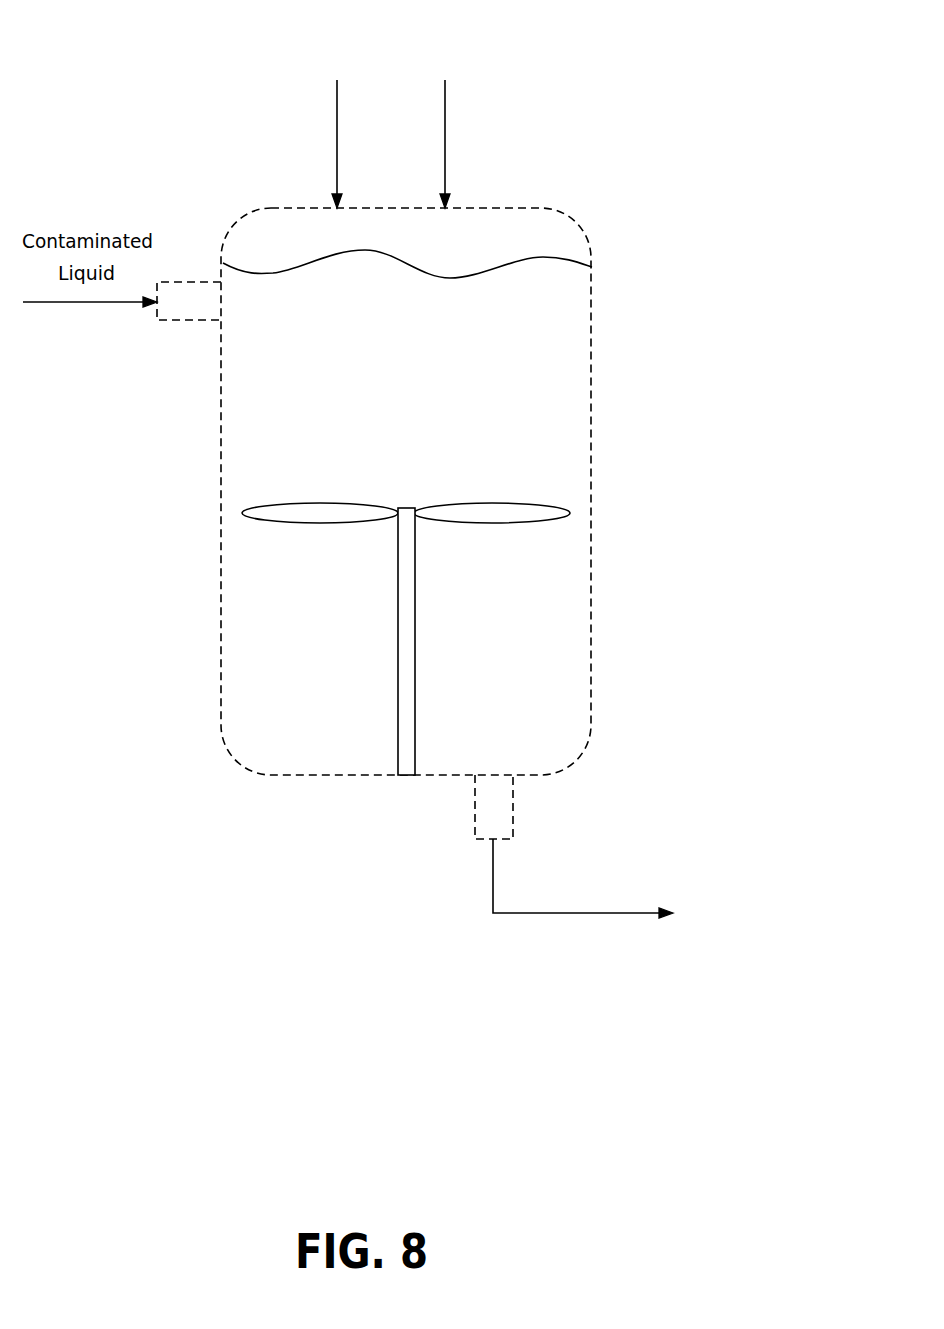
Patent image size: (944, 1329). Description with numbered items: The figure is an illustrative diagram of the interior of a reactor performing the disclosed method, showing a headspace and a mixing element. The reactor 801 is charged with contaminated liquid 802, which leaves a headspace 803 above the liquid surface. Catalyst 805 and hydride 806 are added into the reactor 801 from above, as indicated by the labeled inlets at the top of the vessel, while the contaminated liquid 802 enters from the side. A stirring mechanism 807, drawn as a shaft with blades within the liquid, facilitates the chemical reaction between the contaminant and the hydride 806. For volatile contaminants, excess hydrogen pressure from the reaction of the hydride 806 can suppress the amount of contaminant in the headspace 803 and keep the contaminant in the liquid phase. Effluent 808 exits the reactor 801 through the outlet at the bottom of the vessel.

The reactor 801 is at (220, 655).
The contaminated liquid 802 is at (263, 270).
The headspace 803 is at (513, 232).
The catalyst 805 is at (283, 60).
The hydride 806 is at (492, 65).
The stirring mechanism 807 is at (240, 508).
The effluent 808 is at (595, 873).